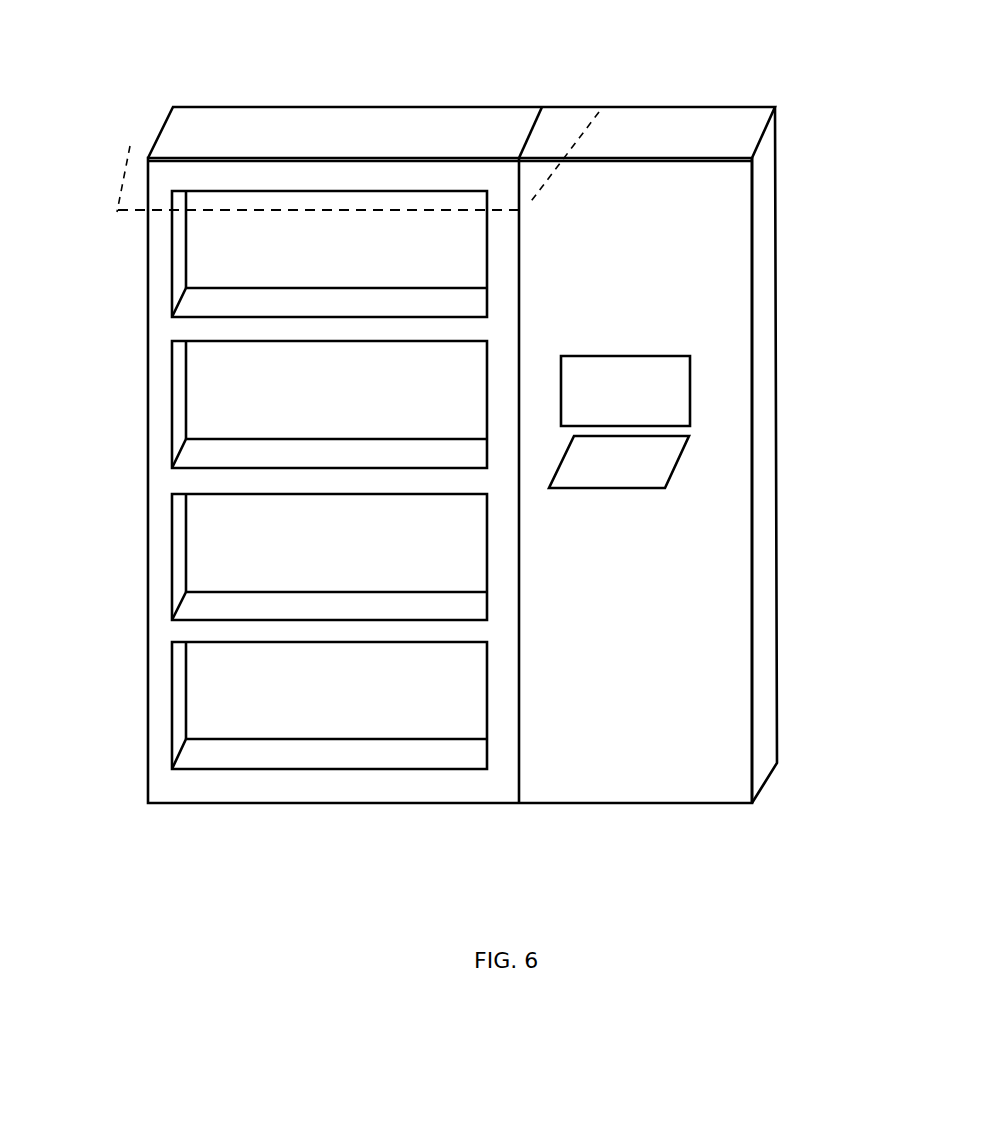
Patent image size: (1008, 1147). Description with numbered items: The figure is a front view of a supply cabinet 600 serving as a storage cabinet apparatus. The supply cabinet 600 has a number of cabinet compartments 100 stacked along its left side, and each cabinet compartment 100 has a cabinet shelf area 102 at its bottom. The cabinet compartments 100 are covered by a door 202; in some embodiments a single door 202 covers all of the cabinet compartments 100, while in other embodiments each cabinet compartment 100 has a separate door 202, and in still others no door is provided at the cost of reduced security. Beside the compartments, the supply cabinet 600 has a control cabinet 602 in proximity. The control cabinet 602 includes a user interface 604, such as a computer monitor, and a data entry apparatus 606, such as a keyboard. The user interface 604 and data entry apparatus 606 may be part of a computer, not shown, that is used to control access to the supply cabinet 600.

The supply cabinet 600 is at (337, 56).
The door 202 is at (454, 192).
The control cabinet 602 is at (757, 200).
The user interface 604 is at (695, 376).
The data entry apparatus 606 is at (680, 462).
The cabinet compartment 100 is at (176, 240).
The cabinet shelf area 102 is at (218, 262).